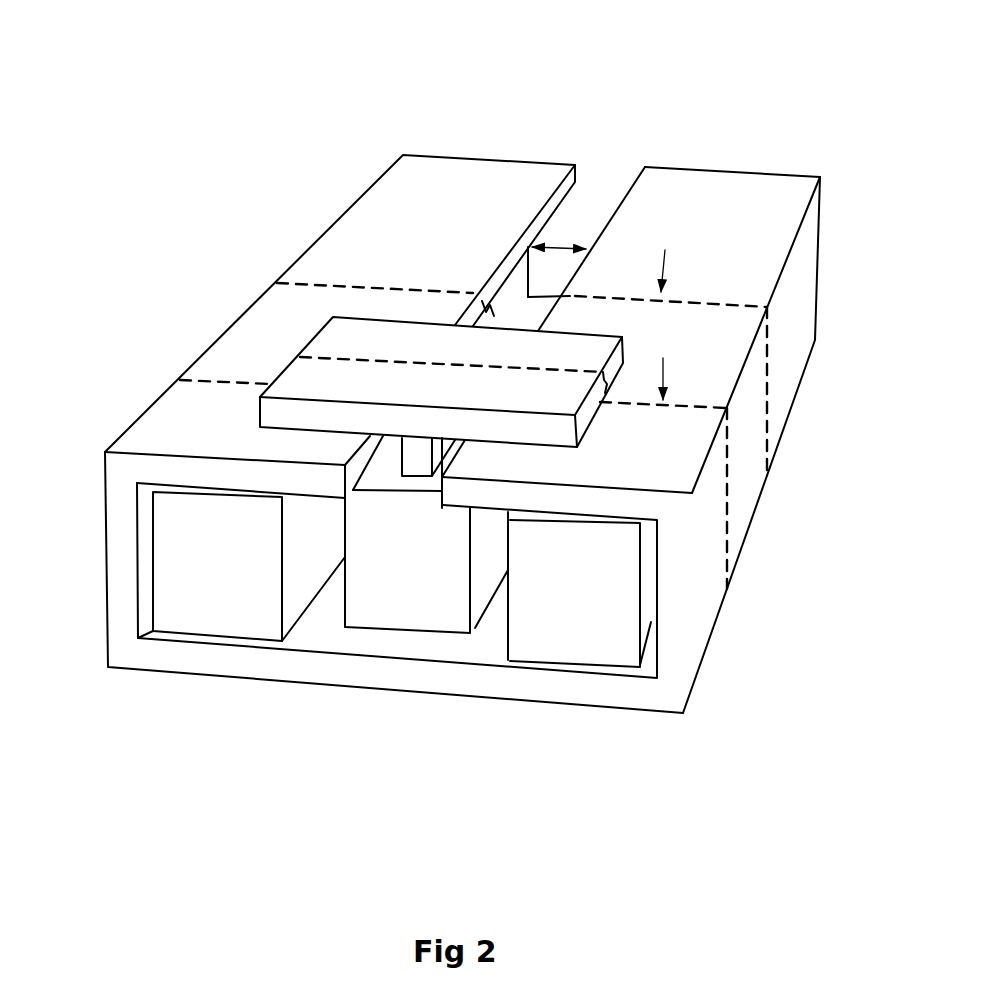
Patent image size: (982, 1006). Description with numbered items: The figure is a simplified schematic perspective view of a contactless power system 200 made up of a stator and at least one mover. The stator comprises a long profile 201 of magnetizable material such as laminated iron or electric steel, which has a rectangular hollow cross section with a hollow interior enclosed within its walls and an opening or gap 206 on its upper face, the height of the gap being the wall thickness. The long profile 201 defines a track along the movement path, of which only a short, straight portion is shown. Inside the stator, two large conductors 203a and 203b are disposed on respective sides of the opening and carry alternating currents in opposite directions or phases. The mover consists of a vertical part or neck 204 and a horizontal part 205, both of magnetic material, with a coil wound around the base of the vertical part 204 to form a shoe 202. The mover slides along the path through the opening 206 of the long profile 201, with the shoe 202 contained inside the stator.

The contactless power system 200 is at (580, 103).
The long profile 201 is at (460, 683).
The shoe 202 is at (398, 585).
The conductor 203a is at (242, 575).
The conductor 203b is at (595, 632).
The vertical part 204 is at (412, 457).
The horizontal part 205 is at (338, 373).
The gap 206 is at (560, 240).